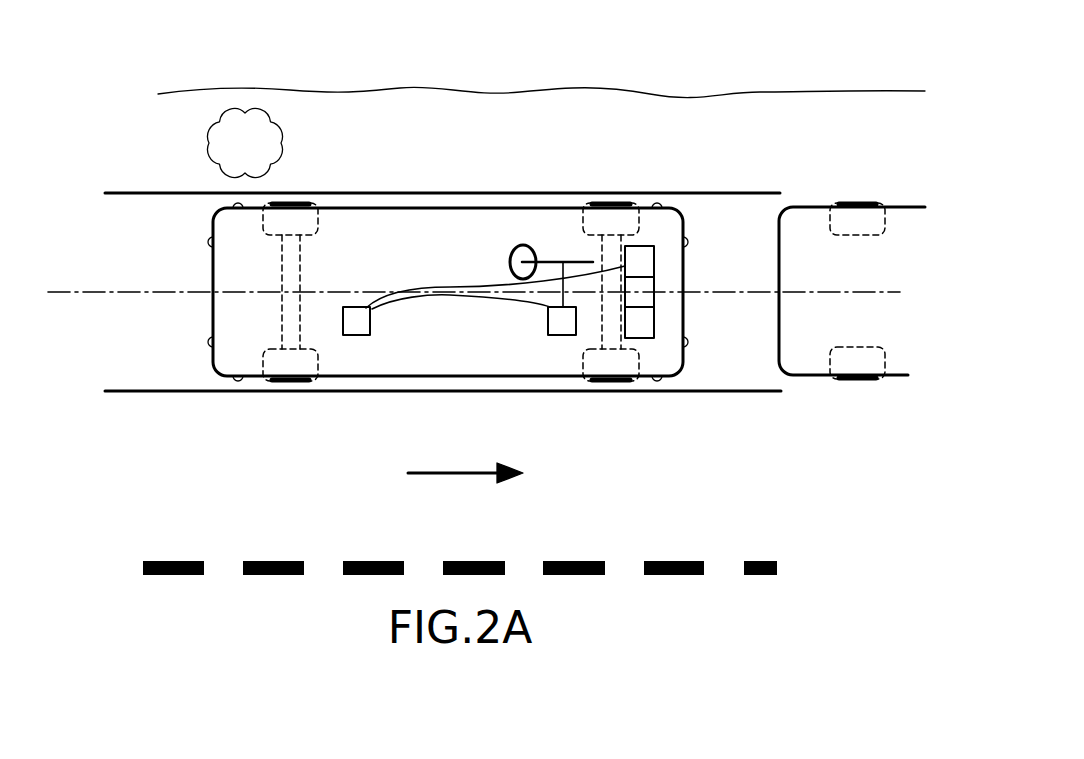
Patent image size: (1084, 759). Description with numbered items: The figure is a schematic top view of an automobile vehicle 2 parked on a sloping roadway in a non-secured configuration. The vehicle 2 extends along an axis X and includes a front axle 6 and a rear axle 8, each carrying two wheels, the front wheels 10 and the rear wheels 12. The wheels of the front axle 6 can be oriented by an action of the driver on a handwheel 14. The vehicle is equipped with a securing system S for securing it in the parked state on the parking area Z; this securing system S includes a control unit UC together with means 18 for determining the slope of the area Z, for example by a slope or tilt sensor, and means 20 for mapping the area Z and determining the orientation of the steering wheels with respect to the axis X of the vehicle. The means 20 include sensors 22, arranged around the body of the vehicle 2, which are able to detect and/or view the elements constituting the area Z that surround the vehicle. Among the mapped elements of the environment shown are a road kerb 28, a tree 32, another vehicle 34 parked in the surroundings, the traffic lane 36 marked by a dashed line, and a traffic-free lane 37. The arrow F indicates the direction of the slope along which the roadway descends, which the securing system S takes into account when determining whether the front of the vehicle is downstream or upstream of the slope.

The automobile vehicle 2 is at (422, 249).
The front axle 6 is at (584, 341).
The rear axle 8 is at (254, 297).
The front wheels 10 is at (627, 202).
The rear wheels 12 is at (284, 382).
The handwheel 14 is at (519, 245).
The means for determining the direction and sense of the slope 18 is at (690, 238).
The means for determining the configuration of the parking area 20 is at (647, 300).
The detecting and/or viewing sensors 22 is at (208, 343).
The road kerb 28 is at (862, 258).
The tree 32 is at (256, 122).
The vehicle 34 is at (900, 214).
The traffic lane 36 is at (697, 548).
The non-traffic lane 37 is at (760, 122).
The control unit UC is at (355, 337).
The securing system S is at (654, 266).
The axis of the automobile vehicle X is at (896, 292).
The parking area Z is at (733, 377).
The slope direction F is at (460, 477).